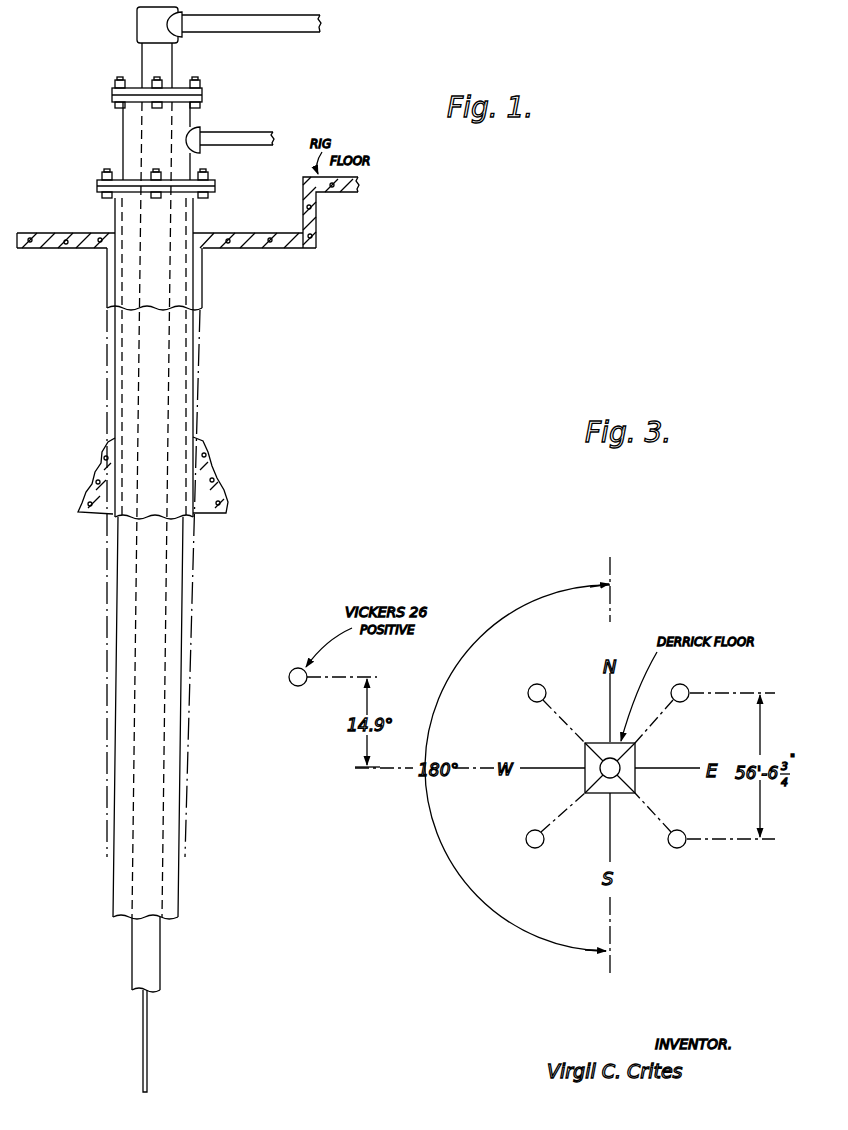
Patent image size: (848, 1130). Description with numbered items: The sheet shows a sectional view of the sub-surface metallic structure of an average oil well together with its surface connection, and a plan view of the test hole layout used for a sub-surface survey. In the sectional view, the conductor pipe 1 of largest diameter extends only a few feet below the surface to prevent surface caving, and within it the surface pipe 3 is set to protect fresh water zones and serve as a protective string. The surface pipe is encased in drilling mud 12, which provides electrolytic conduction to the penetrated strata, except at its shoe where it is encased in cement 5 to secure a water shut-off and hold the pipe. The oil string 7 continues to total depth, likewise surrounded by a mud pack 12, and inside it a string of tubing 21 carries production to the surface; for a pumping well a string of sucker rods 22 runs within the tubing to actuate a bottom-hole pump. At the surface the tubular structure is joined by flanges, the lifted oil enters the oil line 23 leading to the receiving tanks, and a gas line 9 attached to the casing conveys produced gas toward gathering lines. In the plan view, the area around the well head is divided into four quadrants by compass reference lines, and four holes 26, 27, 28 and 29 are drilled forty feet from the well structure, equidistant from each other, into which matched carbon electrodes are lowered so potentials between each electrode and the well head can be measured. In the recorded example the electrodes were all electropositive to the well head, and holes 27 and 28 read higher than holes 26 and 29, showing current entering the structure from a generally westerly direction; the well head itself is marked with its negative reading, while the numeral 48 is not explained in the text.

In FIG. 1, the conductor pipe 1 is at (105, 273).
In FIG. 1, the surface pipe 3 is at (113, 388).
In FIG. 1, the cement 5 is at (97, 468).
In FIG. 1, the oil string 7 is at (181, 891).
In FIG. 1, the gas line 9 is at (258, 128).
In FIG. 1, the drilling mud 12 is at (204, 389).
In FIG. 1, the string of tubing 21 is at (131, 941).
In FIG. 1, the string of sucker rods 22 is at (142, 1036).
In FIG. 1, the oil line 23 is at (269, 34).
In FIG. 3, the hole 26 is at (667, 703).
In FIG. 3, the hole 27 is at (555, 703).
In FIG. 3, the hole 28 is at (553, 833).
In FIG. 3, the hole 29 is at (670, 833).
In FIG. 3, the well head 48 is at (617, 778).